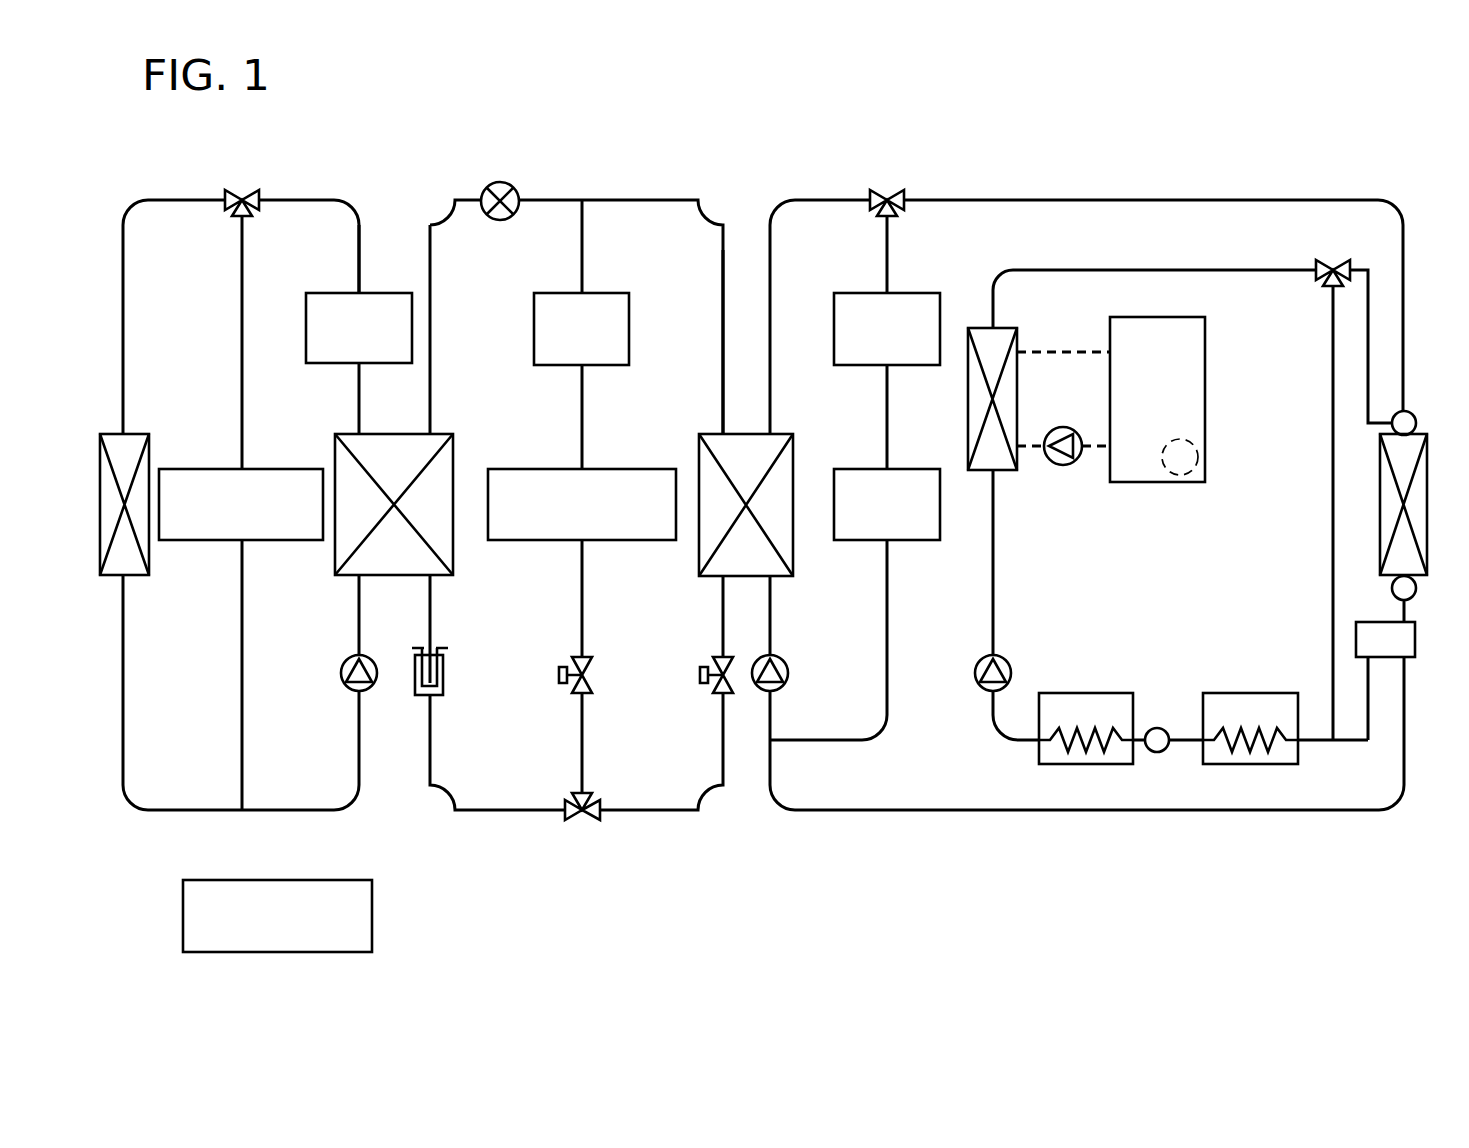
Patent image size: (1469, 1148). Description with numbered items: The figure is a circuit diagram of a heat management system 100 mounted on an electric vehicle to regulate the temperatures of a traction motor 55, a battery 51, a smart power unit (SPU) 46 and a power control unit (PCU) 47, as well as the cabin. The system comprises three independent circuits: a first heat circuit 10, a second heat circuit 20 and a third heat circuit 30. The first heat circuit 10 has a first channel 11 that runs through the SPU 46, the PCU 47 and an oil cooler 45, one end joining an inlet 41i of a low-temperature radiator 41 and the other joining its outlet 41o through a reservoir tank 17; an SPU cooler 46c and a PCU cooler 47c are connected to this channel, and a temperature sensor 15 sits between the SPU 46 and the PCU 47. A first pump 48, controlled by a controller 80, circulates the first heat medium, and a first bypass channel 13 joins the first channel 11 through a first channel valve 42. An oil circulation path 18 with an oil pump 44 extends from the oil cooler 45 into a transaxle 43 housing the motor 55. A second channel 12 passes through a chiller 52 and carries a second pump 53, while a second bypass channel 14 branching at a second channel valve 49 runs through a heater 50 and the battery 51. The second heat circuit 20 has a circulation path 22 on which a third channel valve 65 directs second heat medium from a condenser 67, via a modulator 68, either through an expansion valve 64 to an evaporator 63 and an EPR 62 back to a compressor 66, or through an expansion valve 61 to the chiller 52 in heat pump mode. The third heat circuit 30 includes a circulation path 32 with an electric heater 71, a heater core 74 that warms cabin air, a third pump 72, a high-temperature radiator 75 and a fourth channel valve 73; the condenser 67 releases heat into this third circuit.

The heat management system 100 is at (162, 170).
The first heat circuit 10 is at (1174, 167).
The first channel 11 is at (991, 591).
The second channel 12 is at (995, 198).
The first bypass channel 13 is at (1333, 436).
The second bypass channel 14 is at (890, 412).
The temperature sensor 15 is at (1157, 752).
The reservoir tank 17 is at (1378, 621).
The oil circulation path 18 is at (1052, 350).
The second heat circuit 20 is at (615, 165).
The circulation path 22 is at (725, 247).
The third heat circuit 30 is at (300, 170).
The circulation path 32 is at (371, 232).
The low-temperature radiator 41 is at (1380, 492).
The inlet 41i is at (1412, 414).
The outlet 41o is at (1412, 600).
The first channel valve 42 is at (1326, 260).
The transaxle 43 is at (1158, 483).
The oil pump 44 is at (1064, 466).
The oil cooler 45 is at (983, 327).
The smart power unit (SPU) 46 is at (1250, 692).
The SPU cooler 46c is at (1248, 752).
The power control unit (PCU) 47 is at (1087, 692).
The PCU cooler 47c is at (1080, 752).
The first pump 48 is at (974, 668).
The second channel valve 49 is at (882, 191).
The heater 50 is at (910, 292).
The battery 51 is at (850, 468).
The chiller 52 is at (757, 580).
The second pump 53 is at (788, 675).
The traction motor 55 is at (1198, 447).
The expansion valve 61 is at (710, 668).
The evaporator pressure regulator (EPR) 62 is at (559, 292).
The evaporator 63 is at (537, 468).
The expansion valve 64 is at (598, 681).
The third channel valve 65 is at (575, 822).
The compressor 66 is at (500, 181).
The condenser 67 is at (405, 577).
The modulator 68 is at (445, 668).
The electric heater 71 is at (336, 292).
The third pump 72 is at (340, 671).
The fourth channel valve 73 is at (236, 192).
The heater core 74 is at (218, 468).
The high-temperature radiator 75 is at (135, 432).
The controller 80 is at (373, 912).